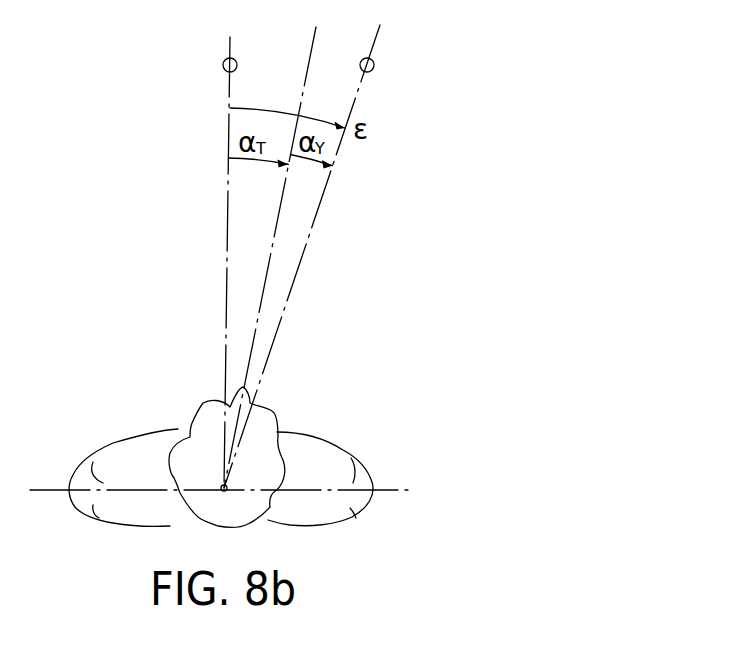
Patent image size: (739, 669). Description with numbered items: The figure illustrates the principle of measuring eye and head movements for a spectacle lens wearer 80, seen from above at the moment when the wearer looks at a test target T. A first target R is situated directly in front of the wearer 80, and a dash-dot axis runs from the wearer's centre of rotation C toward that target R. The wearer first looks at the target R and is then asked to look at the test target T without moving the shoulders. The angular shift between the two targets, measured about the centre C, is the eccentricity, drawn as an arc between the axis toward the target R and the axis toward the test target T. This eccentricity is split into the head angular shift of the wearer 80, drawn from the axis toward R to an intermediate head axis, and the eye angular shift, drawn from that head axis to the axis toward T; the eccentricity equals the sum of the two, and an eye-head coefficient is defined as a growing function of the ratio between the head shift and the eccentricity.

The spectacle lens wearer 80 is at (336, 426).
The first target R is at (223, 64).
The test target T is at (372, 60).
The center C is at (221, 486).